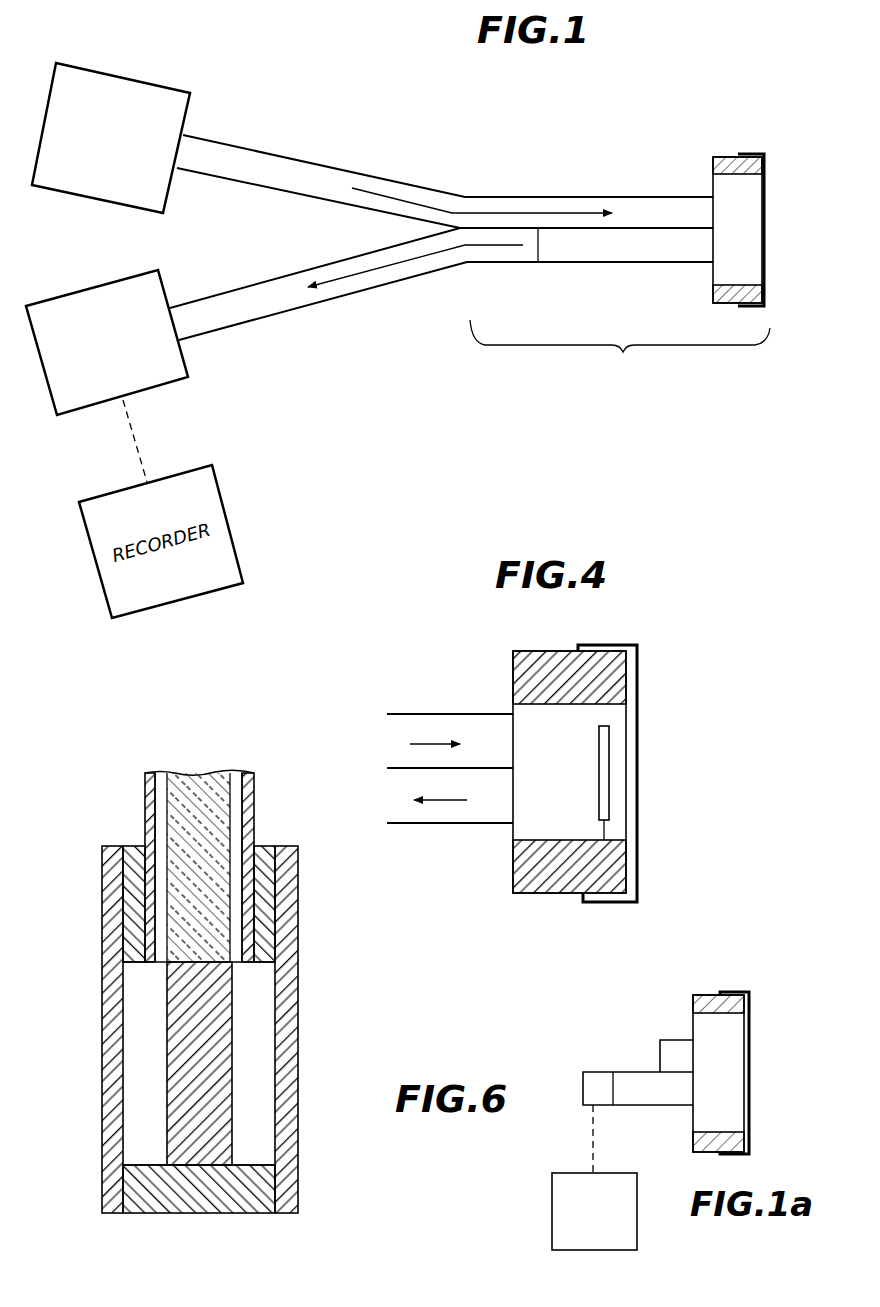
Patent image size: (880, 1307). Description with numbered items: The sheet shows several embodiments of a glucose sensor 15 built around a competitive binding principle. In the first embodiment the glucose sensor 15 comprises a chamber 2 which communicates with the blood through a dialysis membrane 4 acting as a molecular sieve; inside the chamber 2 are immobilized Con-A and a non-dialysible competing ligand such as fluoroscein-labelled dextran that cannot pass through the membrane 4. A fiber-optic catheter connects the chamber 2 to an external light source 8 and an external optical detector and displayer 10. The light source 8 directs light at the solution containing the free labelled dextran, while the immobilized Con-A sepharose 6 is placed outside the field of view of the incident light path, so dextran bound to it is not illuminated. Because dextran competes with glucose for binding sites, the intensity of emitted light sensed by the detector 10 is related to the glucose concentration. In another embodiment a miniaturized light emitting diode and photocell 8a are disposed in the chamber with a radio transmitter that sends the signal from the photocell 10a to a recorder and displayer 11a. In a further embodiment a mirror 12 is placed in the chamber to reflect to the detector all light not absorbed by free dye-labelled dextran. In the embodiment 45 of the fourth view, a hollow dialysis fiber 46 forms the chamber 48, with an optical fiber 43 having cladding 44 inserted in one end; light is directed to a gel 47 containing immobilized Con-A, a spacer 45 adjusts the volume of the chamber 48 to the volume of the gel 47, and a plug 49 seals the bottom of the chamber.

In FIG. 1, the chamber 2 is at (620, 349).
In FIG. 1, the dialysis membrane 4 is at (766, 218).
In FIG. 4, the dialysis membrane 4 is at (638, 702).
In FIG. 1A, the dialysis membrane 4 is at (751, 1062).
In FIG. 1, the immobilized Con-A sepharose 6 is at (726, 157).
In FIG. 4, the immobilized Con-A sepharose 6 is at (553, 894).
In FIG. 1A, the immobilized Con-A sepharose 6 is at (708, 995).
In FIG. 1, the light source 8 is at (175, 86).
In FIG. 1, the optical detector and displayer 10 is at (186, 358).
In FIG. 4, the mirror 12 is at (610, 775).
In FIG. 1, the glucose sensor 15 is at (433, 158).
In FIG. 1A, the miniaturized light emitting diode and photocell 8a is at (677, 1048).
In FIG. 1A, the photocell 10a is at (600, 1082).
In FIG. 1A, the recorder and displayer 11a is at (637, 1215).
In FIG. 6, the optical fiber 43 is at (182, 792).
In FIG. 6, the cladding 44 is at (248, 820).
In FIG. 6, the spacer 45 is at (133, 890).
In FIG. 6, the hollow dialysis fiber 46 is at (110, 1003).
In FIG. 6, the gel 47 is at (180, 1072).
In FIG. 6, the chamber 48 is at (140, 1145).
In FIG. 6, the plug 49 is at (183, 1200).